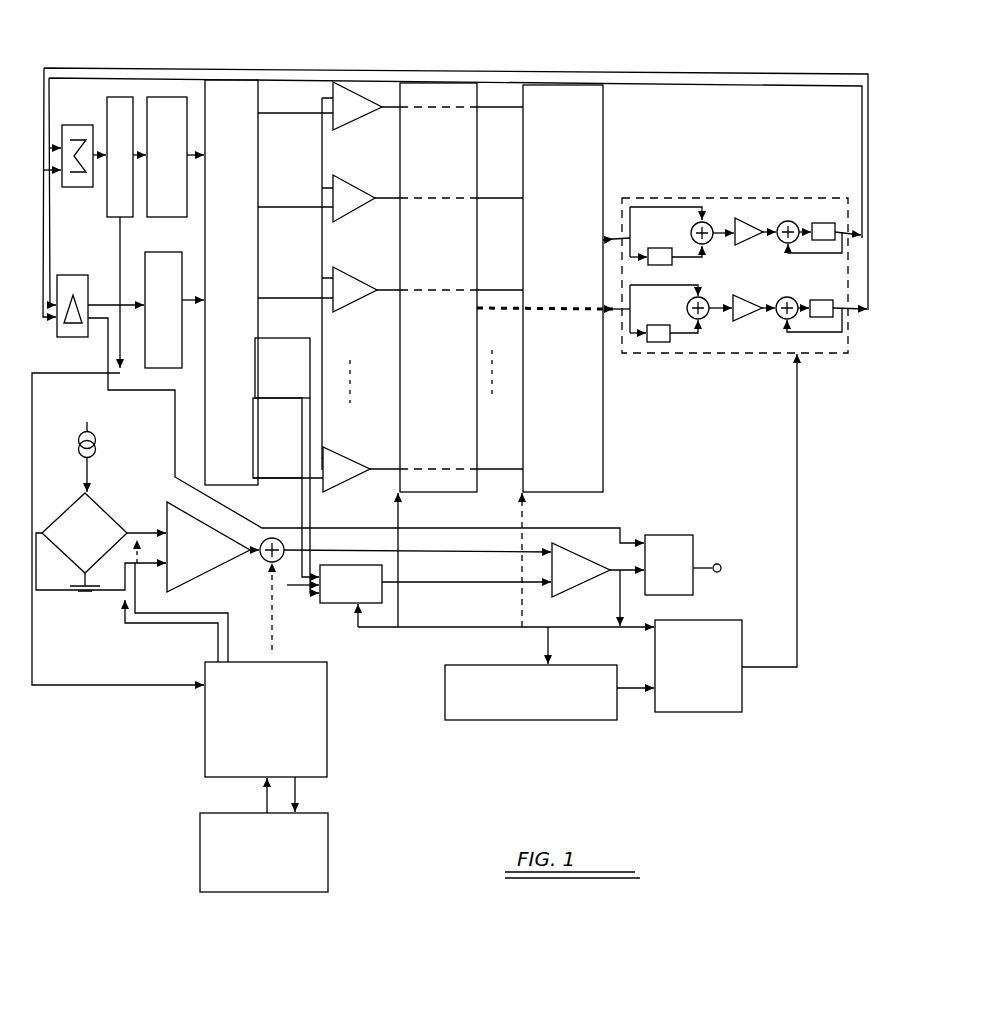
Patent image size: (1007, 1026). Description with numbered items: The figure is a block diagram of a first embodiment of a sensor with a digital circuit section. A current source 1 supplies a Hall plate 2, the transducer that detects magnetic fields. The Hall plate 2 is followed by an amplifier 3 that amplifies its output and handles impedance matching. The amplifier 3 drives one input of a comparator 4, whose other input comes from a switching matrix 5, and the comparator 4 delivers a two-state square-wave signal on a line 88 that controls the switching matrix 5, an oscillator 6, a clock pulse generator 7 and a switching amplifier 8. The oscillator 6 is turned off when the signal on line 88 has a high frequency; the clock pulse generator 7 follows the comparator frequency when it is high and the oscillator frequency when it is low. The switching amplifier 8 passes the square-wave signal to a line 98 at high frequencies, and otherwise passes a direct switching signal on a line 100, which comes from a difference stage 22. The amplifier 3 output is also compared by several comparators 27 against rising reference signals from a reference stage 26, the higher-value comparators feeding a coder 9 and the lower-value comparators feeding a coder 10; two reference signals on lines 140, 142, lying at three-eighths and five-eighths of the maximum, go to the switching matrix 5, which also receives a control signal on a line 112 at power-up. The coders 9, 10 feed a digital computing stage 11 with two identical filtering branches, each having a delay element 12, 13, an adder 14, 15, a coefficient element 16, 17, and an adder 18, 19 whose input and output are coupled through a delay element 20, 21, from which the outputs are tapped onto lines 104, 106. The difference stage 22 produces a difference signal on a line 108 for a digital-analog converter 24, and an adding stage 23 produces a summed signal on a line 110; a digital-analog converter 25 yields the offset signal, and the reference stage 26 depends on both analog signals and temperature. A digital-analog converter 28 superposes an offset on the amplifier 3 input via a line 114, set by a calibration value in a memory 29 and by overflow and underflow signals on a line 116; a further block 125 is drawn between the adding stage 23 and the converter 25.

The current source 1 is at (94, 457).
The Hall plate 2 is at (101, 542).
The amplifier 3 is at (359, 547).
The comparator 4 is at (598, 570).
The switching matrix 5 is at (435, 596).
The oscillator 6 is at (549, 673).
The clock pulse generator 7 is at (577, 533).
The switching amplifier 8 is at (669, 565).
The coder 9 is at (477, 152).
The coder 10 is at (603, 468).
The digital computing stage 11 is at (674, 198).
The delay element 12 is at (664, 325).
The delay element 13 is at (666, 247).
The adder 14 is at (700, 300).
The adder 15 is at (707, 226).
The coefficient element 16 is at (754, 299).
The coefficient element 17 is at (755, 223).
The adder 18 is at (809, 305).
The adder 19 is at (809, 227).
The delay element 20 is at (838, 299).
The delay element 21 is at (836, 223).
The difference stage 22 is at (72, 295).
The adding stage 23 is at (77, 145).
The digital-analog converter 24 is at (174, 310).
The digital-analog converter 25 is at (168, 157).
The reference stage 26 is at (231, 282).
The comparators 27 is at (317, 287).
The digital-analog converter 28 is at (226, 670).
The memory 29 is at (264, 834).
The line 88 is at (620, 598).
The line 98 is at (711, 556).
The line 100 is at (620, 528).
The line 104 is at (781, 72).
The line 106 is at (782, 84).
The line 108 is at (103, 300).
The line 110 is at (92, 188).
The line 112 is at (292, 590).
The line 114 is at (270, 645).
The line 116 is at (90, 688).
The register 125 is at (113, 97).
The line 140 is at (287, 459).
The line 142 is at (286, 481).